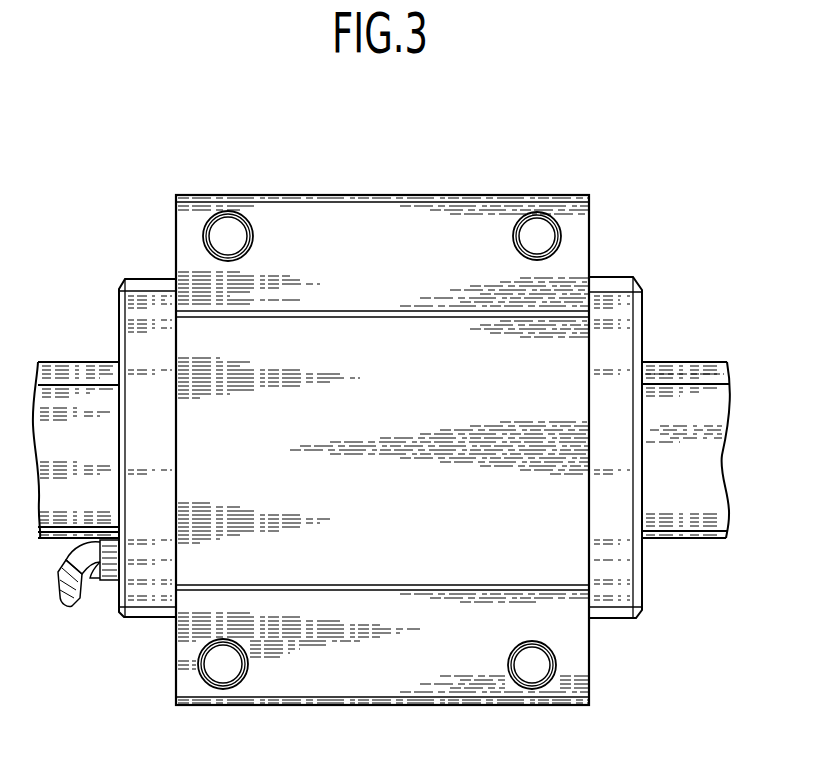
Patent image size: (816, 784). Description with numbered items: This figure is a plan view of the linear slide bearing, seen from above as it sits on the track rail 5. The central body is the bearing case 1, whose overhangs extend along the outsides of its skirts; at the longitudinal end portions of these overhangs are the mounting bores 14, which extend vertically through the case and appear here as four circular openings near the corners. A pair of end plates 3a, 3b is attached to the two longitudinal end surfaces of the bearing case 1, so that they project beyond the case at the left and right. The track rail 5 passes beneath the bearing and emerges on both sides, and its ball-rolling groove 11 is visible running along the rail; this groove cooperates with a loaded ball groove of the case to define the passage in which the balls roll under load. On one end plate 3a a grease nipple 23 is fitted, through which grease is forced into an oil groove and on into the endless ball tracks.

The bearing case 1 is at (397, 192).
The end plate 3a is at (147, 284).
The end plate 3b is at (648, 320).
The track rail 5 is at (728, 424).
The ball-rolling groove 11 is at (706, 372).
The mounting bores 14 is at (222, 221).
The grease nipple 23 is at (100, 582).